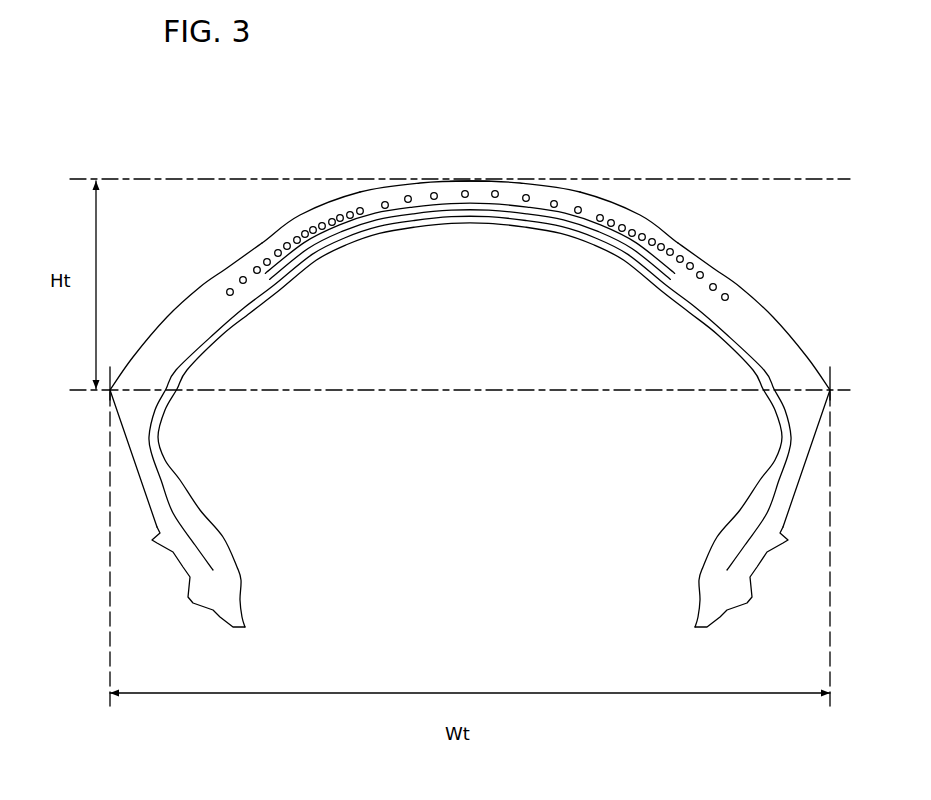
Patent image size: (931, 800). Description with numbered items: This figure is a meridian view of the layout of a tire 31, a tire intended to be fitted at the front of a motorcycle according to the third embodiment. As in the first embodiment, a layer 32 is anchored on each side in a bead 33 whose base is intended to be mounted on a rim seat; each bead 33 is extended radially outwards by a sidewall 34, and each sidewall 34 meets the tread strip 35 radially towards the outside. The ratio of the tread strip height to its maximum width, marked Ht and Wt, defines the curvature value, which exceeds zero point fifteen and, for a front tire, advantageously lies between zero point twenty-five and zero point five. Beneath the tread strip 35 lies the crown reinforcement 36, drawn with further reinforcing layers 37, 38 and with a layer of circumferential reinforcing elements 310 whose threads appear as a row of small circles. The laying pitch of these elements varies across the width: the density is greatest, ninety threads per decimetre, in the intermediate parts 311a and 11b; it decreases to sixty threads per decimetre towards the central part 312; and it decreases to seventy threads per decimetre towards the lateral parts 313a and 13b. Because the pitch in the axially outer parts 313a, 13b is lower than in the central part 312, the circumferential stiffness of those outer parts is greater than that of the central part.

The tire 31 is at (464, 360).
The carcass ply 32 is at (755, 528).
The bead portion 33 is at (223, 592).
The sidewall portion 34 is at (129, 447).
The tread portion 35 is at (380, 190).
The crown reinforcement 36 is at (743, 323).
The belt layer 37 is at (262, 266).
The belt reinforcing layer 38 is at (592, 216).
The layer of circumferential reinforcing elements 310 is at (235, 296).
The intermediate part 311a is at (309, 204).
The central part 312 is at (462, 177).
The lateral part 313a is at (222, 264).
The tread edge 11b is at (674, 227).
The shoulder point 13b is at (736, 276).